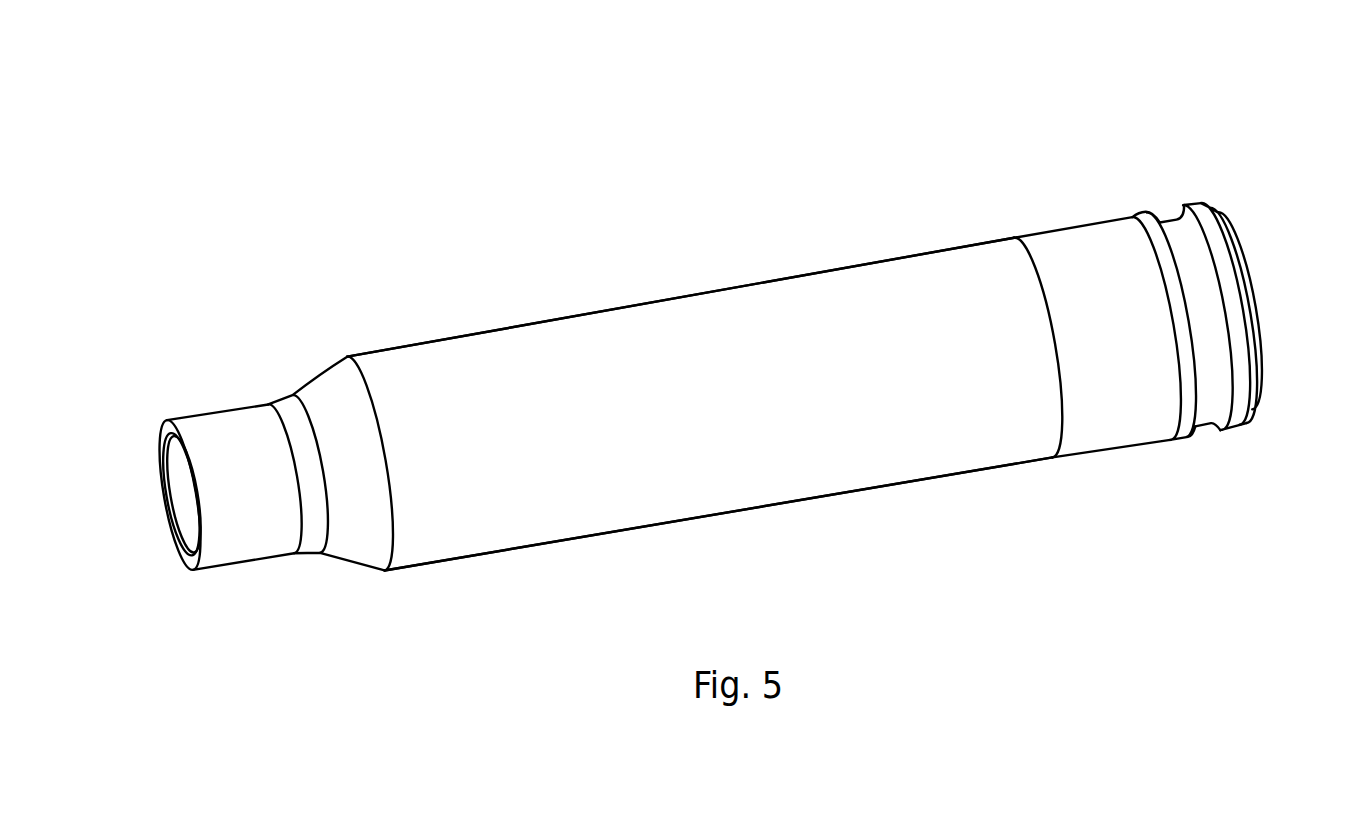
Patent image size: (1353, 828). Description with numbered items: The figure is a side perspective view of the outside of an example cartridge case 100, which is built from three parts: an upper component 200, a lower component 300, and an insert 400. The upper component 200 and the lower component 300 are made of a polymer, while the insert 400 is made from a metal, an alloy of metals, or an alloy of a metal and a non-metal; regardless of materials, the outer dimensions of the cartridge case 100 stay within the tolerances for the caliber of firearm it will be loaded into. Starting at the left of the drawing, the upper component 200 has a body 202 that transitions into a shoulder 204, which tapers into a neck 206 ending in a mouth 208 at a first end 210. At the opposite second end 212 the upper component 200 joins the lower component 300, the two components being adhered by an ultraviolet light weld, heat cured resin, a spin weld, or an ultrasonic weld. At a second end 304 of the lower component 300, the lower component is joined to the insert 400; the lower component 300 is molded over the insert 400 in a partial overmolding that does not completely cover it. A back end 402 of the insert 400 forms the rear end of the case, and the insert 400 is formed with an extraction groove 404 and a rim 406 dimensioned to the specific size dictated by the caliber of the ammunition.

The cartridge case 100 is at (822, 206).
The upper component 200 is at (556, 154).
The body 202 is at (443, 338).
The shoulder 204 is at (323, 392).
The neck 206 is at (240, 548).
The mouth 208 is at (176, 470).
The first end 210 is at (165, 384).
The second end 212 is at (995, 216).
The lower component 300 is at (1092, 443).
The second end 304 is at (1115, 197).
The insert 400 is at (1148, 143).
The back end 402 is at (1203, 178).
The extraction groove 404 is at (1218, 410).
The rim 406 is at (1220, 260).